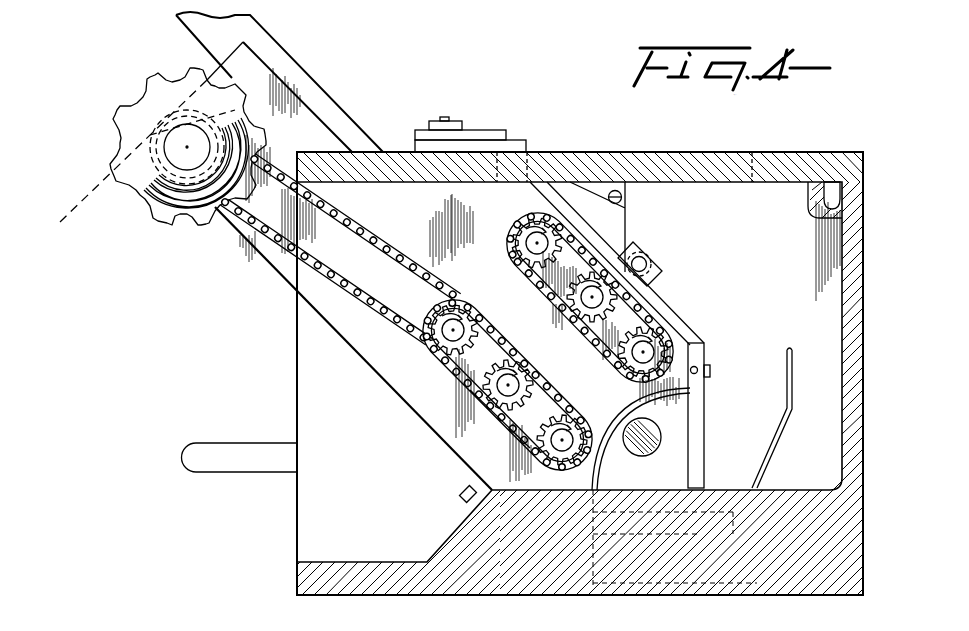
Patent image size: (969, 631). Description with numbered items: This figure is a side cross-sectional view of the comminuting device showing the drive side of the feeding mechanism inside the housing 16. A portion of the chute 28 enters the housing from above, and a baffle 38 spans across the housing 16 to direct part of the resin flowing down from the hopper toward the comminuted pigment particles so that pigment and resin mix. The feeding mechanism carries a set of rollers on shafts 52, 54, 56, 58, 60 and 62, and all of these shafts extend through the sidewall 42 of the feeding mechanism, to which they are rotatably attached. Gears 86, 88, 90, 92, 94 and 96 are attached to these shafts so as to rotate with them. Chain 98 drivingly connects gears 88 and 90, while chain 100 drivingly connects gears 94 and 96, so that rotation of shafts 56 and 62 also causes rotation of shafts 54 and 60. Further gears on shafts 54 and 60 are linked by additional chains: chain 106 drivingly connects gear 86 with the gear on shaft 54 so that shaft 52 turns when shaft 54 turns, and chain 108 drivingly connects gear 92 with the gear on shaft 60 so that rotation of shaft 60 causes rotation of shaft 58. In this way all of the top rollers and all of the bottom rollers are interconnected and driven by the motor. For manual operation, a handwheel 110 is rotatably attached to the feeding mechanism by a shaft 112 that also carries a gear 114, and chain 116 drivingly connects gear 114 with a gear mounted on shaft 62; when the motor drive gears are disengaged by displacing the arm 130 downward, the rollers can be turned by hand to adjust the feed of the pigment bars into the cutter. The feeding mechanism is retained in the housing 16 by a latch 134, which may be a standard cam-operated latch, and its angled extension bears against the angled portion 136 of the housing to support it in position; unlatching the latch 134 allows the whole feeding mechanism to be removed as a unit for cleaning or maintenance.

The housing 16 is at (862, 338).
The chute 28 is at (282, 47).
The baffle 38 is at (790, 410).
The sidewall 42 is at (290, 107).
The shaft 52 is at (648, 360).
The shaft 54 is at (598, 298).
The shaft 56 is at (542, 240).
The shaft 58 is at (548, 452).
The shaft 60 is at (505, 390).
The shaft 62 is at (452, 331).
The gear 86 is at (662, 350).
The gear 88 is at (646, 262).
The gear 90 is at (530, 233).
The gear 92 is at (566, 448).
The gear 94 is at (527, 378).
The gear 96 is at (440, 346).
The chain 98 is at (572, 235).
The chain 100 is at (428, 330).
The chain 106 is at (648, 312).
The chain 108 is at (507, 433).
The handwheel 110 is at (117, 112).
The shaft 112 is at (132, 141).
The gear 114 is at (398, 561).
The chain 116 is at (285, 250).
The arm 130 is at (195, 478).
The latch 134 is at (488, 128).
The angled portion 136 is at (652, 456).